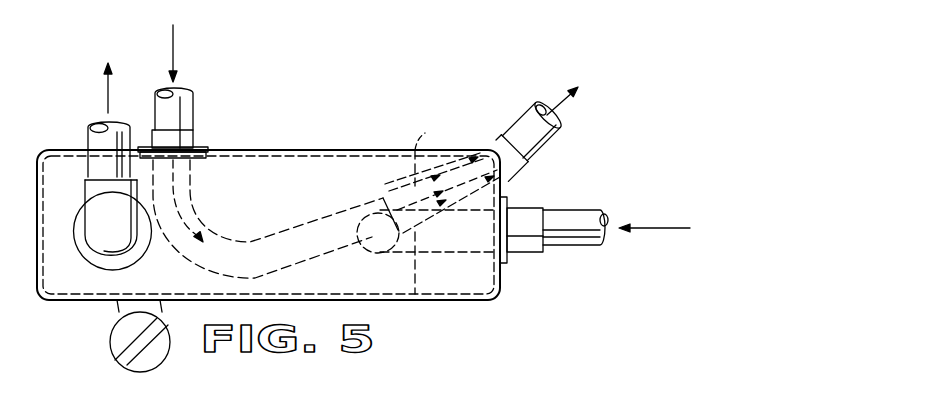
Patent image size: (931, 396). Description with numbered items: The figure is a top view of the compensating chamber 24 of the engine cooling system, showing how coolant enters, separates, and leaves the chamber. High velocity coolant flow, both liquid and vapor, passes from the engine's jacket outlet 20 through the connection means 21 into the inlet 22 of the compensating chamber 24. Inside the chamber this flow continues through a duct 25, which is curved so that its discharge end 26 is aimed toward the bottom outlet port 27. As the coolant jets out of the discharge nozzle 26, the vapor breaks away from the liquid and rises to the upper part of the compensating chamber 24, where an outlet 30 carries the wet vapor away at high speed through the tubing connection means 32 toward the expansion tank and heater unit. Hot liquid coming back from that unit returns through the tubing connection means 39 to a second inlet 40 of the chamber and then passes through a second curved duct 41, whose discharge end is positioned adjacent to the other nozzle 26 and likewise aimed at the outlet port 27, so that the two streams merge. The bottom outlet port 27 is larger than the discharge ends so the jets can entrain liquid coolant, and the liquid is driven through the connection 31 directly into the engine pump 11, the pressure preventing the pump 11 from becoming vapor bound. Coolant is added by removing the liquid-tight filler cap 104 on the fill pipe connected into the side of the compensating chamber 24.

The engine pump 11 is at (668, 71).
The jacket outlet 20 is at (714, 238).
The connection means 21 is at (568, 247).
The inlet 22 is at (513, 253).
The compensating chamber 24 is at (403, 311).
The duct 25 is at (414, 296).
The discharge end 26 is at (421, 138).
The bottom outlet port 27 is at (504, 174).
The outlet 30 is at (100, 253).
The connection 31 is at (552, 138).
The tubing connection means 32 is at (92, 138).
The tubing connection means 39 is at (237, 73).
The second inlet 40 is at (188, 142).
The second curved duct 41 is at (207, 216).
The filler cap 104 is at (113, 342).